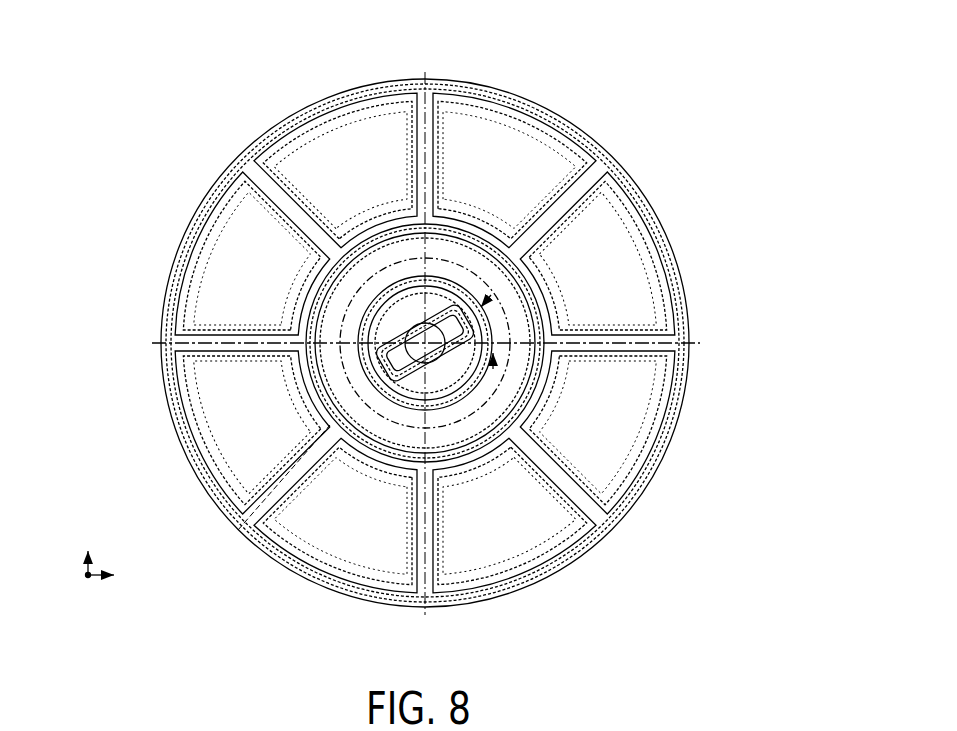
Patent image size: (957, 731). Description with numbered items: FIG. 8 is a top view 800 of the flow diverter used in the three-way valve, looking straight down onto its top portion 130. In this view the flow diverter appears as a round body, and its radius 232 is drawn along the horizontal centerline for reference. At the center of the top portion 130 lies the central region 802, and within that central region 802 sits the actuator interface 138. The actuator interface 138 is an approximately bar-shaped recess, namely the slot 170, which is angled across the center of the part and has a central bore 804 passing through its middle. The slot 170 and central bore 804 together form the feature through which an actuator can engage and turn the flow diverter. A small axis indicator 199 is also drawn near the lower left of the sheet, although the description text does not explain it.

The top view 800 is at (696, 38).
The slot 170 is at (445, 325).
The central bore 804 is at (407, 333).
The central region 802 is at (463, 285).
The actuator interface 138 is at (483, 330).
The radius 232 is at (173, 341).
The top portion 130 is at (250, 410).
The coordinate system 199 is at (106, 542).